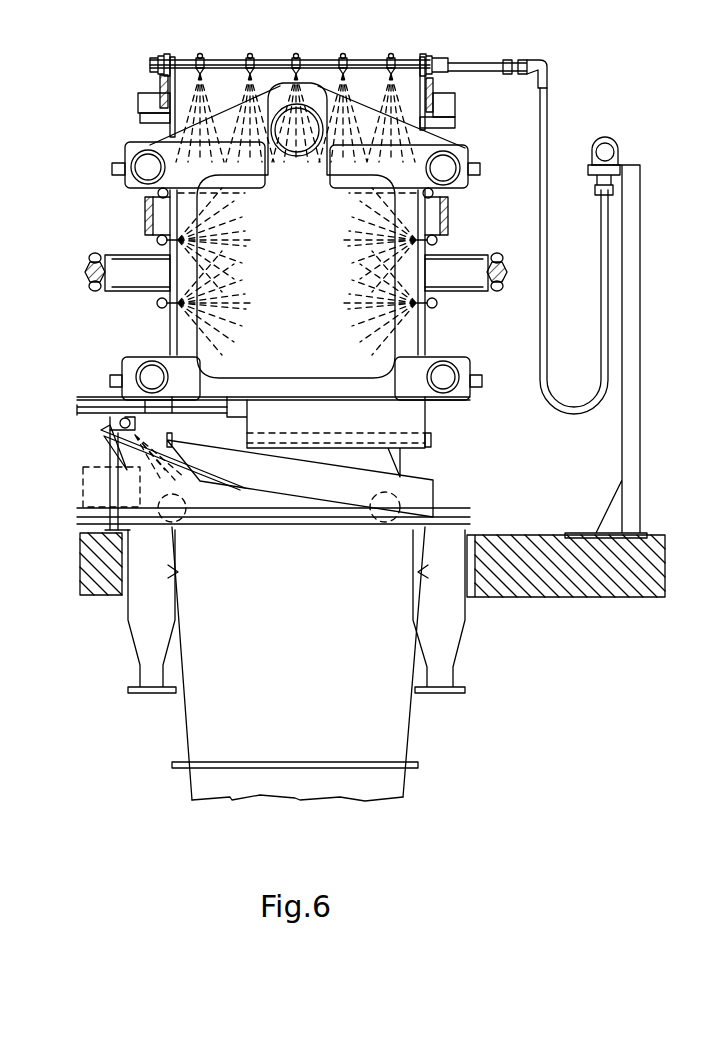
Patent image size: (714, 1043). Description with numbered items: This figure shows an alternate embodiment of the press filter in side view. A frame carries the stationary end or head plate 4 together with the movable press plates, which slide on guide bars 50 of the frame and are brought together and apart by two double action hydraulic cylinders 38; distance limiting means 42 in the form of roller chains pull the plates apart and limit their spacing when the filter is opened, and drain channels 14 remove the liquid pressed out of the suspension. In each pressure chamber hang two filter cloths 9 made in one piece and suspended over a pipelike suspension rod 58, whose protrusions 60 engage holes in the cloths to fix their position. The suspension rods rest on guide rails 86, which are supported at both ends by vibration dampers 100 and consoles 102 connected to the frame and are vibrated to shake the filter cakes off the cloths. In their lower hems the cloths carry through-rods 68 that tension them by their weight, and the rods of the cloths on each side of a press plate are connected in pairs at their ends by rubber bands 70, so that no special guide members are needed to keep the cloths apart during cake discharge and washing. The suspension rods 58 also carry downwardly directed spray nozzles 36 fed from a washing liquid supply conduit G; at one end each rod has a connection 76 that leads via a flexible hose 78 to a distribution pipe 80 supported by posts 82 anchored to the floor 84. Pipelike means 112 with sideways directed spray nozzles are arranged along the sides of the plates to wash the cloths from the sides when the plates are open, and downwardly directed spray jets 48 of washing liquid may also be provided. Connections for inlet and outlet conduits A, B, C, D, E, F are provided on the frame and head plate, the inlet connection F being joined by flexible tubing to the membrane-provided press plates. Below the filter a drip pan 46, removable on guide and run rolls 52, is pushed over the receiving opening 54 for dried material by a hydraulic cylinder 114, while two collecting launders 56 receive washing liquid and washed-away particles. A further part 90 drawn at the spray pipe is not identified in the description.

The head plate 4 is at (135, 255).
The filter cloth 9 is at (262, 72).
The drain channel 14 is at (148, 167).
The spray nozzle 36 is at (222, 60).
The hydraulic cylinder 38 is at (88, 275).
The distance limiting means 42 is at (110, 170).
The drip pan 46 is at (435, 500).
The spray jet 48 is at (316, 87).
The guide bar 50 is at (145, 215).
The guide and run roll 52 is at (378, 518).
The receiving opening 54 is at (325, 691).
The collecting launder 56 is at (145, 642).
The suspension rod 58 is at (380, 62).
The protrusion 60 is at (292, 66).
The through-rod 68 is at (432, 440).
The rubber band 70 is at (160, 448).
The connection 76 is at (538, 62).
The flexible hose 78 is at (542, 372).
The distribution pipe 80 is at (600, 140).
The post 82 is at (620, 475).
The floor 84 is at (95, 595).
The guide rail 86 is at (138, 93).
The pipe connection 90 is at (165, 56).
The vibration damper 100 is at (138, 103).
The console 102 is at (140, 118).
The pipelike means 112 is at (158, 197).
The hydraulic cylinder 114 is at (232, 520).
The feed supply conduit A is at (297, 157).
The conduit connection B is at (125, 172).
The conduit connection C is at (435, 160).
The conduit connection D is at (166, 380).
The conduit connection E is at (450, 385).
The inlet connection F is at (77, 410).
The supply conduit G is at (160, 305).